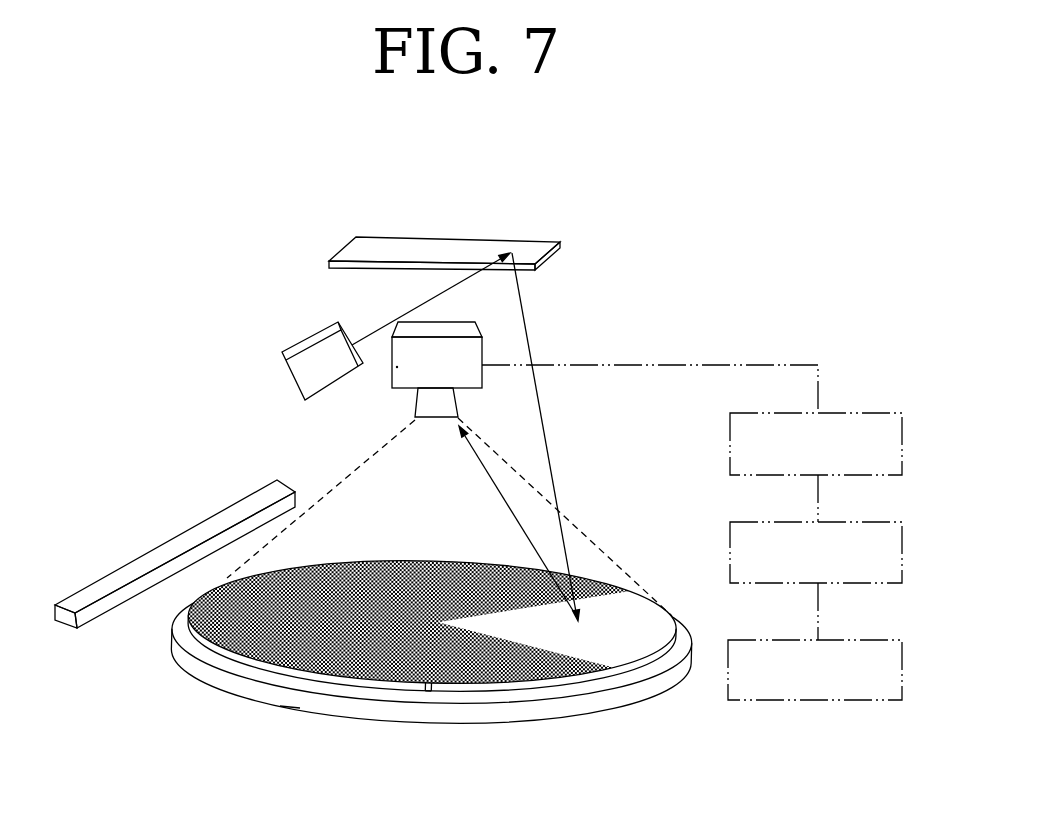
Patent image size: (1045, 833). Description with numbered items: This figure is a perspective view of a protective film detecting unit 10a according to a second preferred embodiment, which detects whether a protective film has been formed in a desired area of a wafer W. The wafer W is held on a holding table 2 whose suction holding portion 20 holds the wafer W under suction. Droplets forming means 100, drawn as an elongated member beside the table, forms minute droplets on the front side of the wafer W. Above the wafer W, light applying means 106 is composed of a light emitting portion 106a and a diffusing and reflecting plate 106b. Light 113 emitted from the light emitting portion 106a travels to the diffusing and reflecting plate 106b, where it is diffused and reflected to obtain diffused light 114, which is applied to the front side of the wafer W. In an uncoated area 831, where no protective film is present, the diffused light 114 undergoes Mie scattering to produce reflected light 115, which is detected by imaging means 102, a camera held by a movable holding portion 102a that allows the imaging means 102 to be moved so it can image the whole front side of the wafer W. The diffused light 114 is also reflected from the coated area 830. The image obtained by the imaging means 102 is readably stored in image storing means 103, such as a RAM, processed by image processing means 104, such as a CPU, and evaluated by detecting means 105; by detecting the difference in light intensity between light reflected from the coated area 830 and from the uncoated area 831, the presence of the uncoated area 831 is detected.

The protective film detecting unit 10a is at (160, 348).
The suction holding portion 20 is at (203, 655).
The holding table 2 is at (287, 703).
The wafer W is at (361, 695).
The coated area 830 is at (308, 627).
The uncoated area 831 is at (555, 638).
The droplets forming means 100 is at (177, 547).
The imaging means 102 is at (413, 403).
The holding portion 102a is at (397, 367).
The light applying means 106 is at (229, 222).
The light emitting portion 106a is at (315, 358).
The diffusing and reflecting plate 106b is at (350, 250).
The light 113 is at (387, 325).
The diffused light 114 is at (527, 323).
The reflected light 115 is at (507, 510).
The image storing means 103 is at (835, 412).
The image processing means 104 is at (835, 521).
The detecting means 105 is at (835, 640).